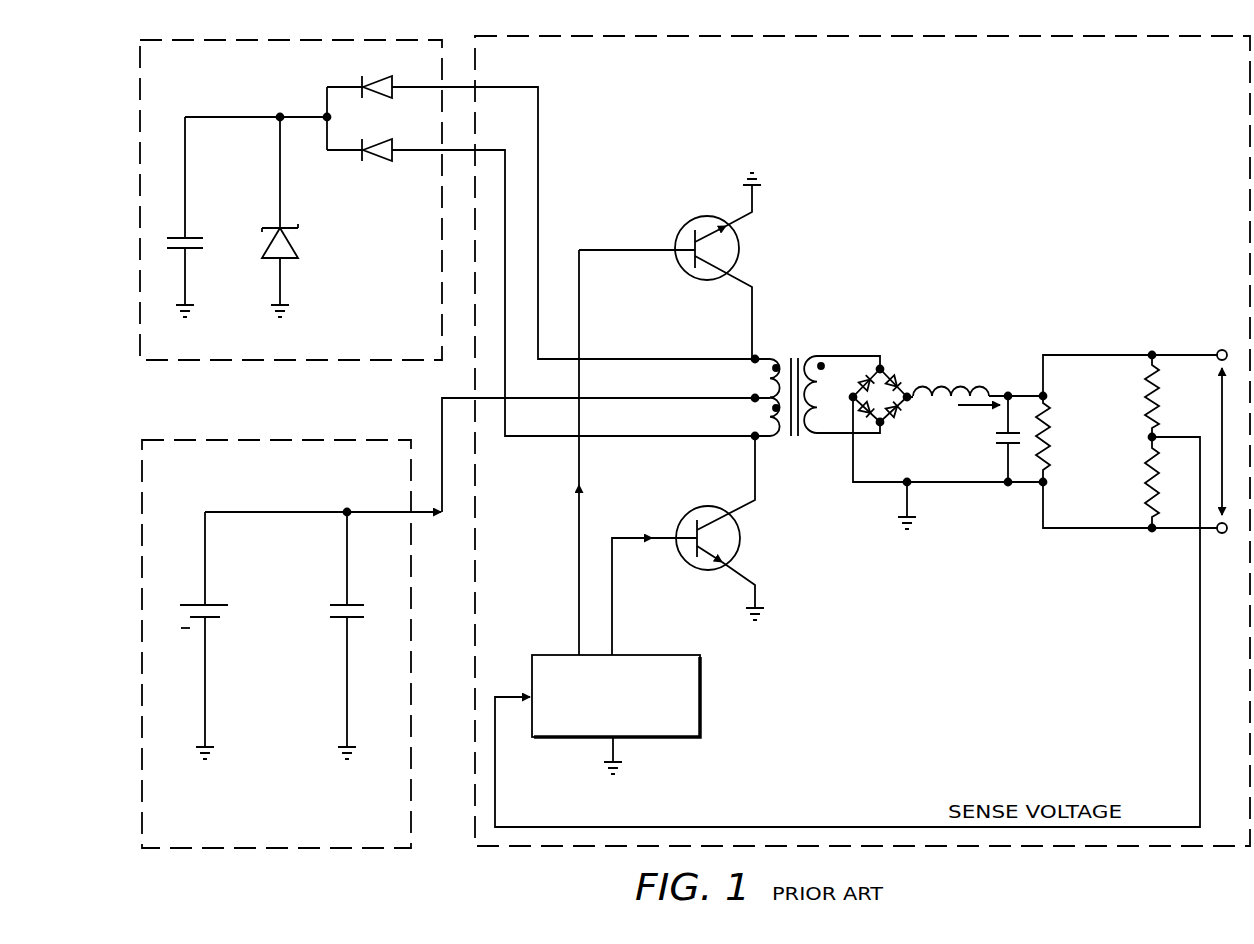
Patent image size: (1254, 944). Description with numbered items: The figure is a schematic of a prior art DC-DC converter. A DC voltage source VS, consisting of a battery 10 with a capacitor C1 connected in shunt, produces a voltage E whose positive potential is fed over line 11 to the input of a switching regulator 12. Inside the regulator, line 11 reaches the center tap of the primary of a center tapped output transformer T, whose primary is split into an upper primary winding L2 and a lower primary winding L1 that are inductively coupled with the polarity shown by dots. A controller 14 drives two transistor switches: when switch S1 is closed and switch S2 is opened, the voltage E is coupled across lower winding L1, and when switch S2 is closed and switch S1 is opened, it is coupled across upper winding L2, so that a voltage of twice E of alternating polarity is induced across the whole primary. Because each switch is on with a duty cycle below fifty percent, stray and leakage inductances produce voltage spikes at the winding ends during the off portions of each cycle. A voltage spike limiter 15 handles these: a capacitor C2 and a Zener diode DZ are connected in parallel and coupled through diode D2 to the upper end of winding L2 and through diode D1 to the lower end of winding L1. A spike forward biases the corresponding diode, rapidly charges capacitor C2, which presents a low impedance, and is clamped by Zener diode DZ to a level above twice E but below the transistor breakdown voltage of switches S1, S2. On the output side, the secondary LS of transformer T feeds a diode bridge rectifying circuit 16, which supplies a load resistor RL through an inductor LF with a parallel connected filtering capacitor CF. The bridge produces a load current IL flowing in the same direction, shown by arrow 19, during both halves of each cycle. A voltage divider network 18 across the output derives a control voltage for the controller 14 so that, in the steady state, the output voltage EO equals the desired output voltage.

The battery 10 is at (180, 614).
The line 11 is at (442, 420).
The switching regulator 12 is at (725, 36).
The controller 14 is at (703, 692).
The voltage spike limiter 15 is at (213, 40).
The diode bridge rectifying circuit 16 is at (908, 372).
The voltage divider network 18 is at (1173, 418).
The arrow 19 is at (988, 396).
The DC voltage source VS is at (210, 440).
The capacitor C1 is at (367, 610).
The capacitor C2 is at (207, 246).
The diode D1 is at (370, 165).
The diode D2 is at (372, 68).
The Zener diode DZ is at (295, 238).
The switch S1 is at (717, 528).
The switch S2 is at (676, 266).
The transformer T is at (746, 399).
The lower primary winding L1 is at (768, 414).
The upper primary winding L2 is at (768, 375).
The secondary LS is at (796, 352).
The inductor LF is at (960, 386).
The filtering capacitor CF is at (995, 436).
The load resistor RL is at (1050, 440).
The current IL is at (979, 420).
The output voltage EO is at (1216, 441).